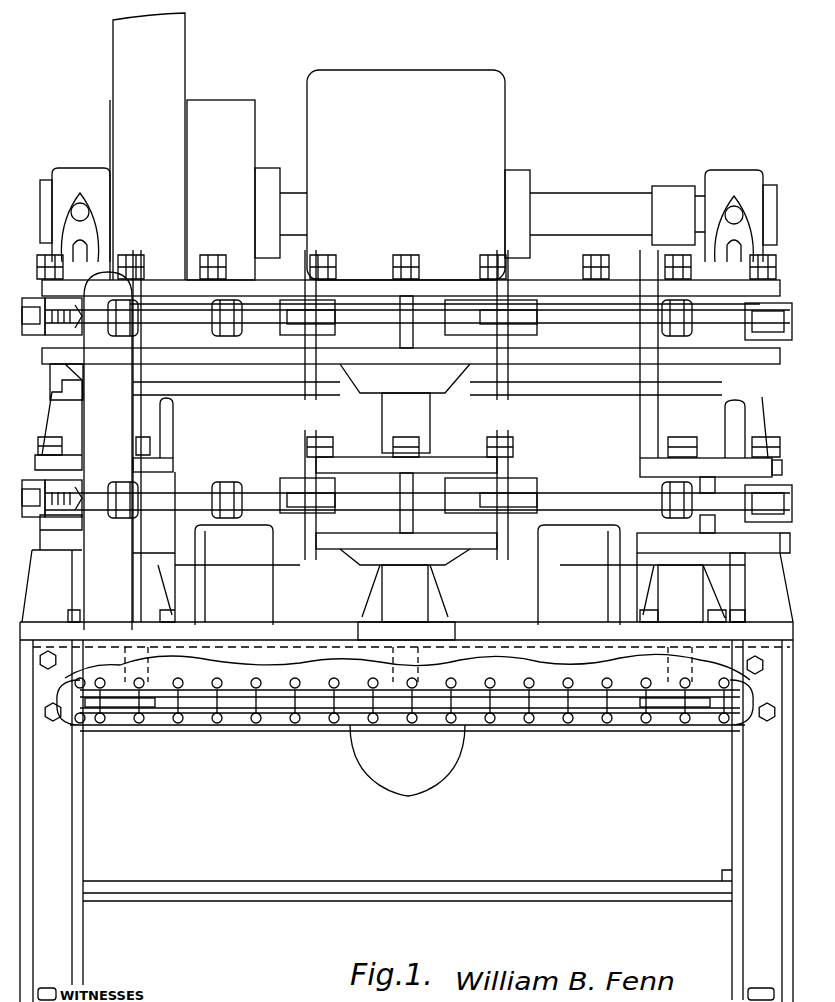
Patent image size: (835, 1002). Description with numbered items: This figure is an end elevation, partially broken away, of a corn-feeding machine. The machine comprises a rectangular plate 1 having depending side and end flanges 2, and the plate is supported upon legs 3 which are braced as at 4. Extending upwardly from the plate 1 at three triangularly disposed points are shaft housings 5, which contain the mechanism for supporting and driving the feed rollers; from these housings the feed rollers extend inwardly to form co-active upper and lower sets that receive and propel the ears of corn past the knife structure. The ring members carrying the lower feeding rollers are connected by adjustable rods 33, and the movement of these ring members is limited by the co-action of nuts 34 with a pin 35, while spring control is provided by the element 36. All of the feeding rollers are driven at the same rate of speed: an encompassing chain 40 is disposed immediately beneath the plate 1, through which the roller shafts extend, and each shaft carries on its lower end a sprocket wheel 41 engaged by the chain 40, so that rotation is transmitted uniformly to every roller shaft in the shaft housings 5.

The plate 1 is at (245, 643).
The side and end flanges 2 is at (300, 665).
The legs 3 is at (72, 843).
The brace 4 is at (388, 888).
The shaft housings 5 is at (579, 575).
The adjustable rods 33 is at (178, 498).
The nuts 34 is at (80, 495).
The pin 35 is at (100, 568).
The spring control element 36 is at (234, 582).
The chain 40 is at (240, 712).
The sprocket wheel 41 is at (160, 705).